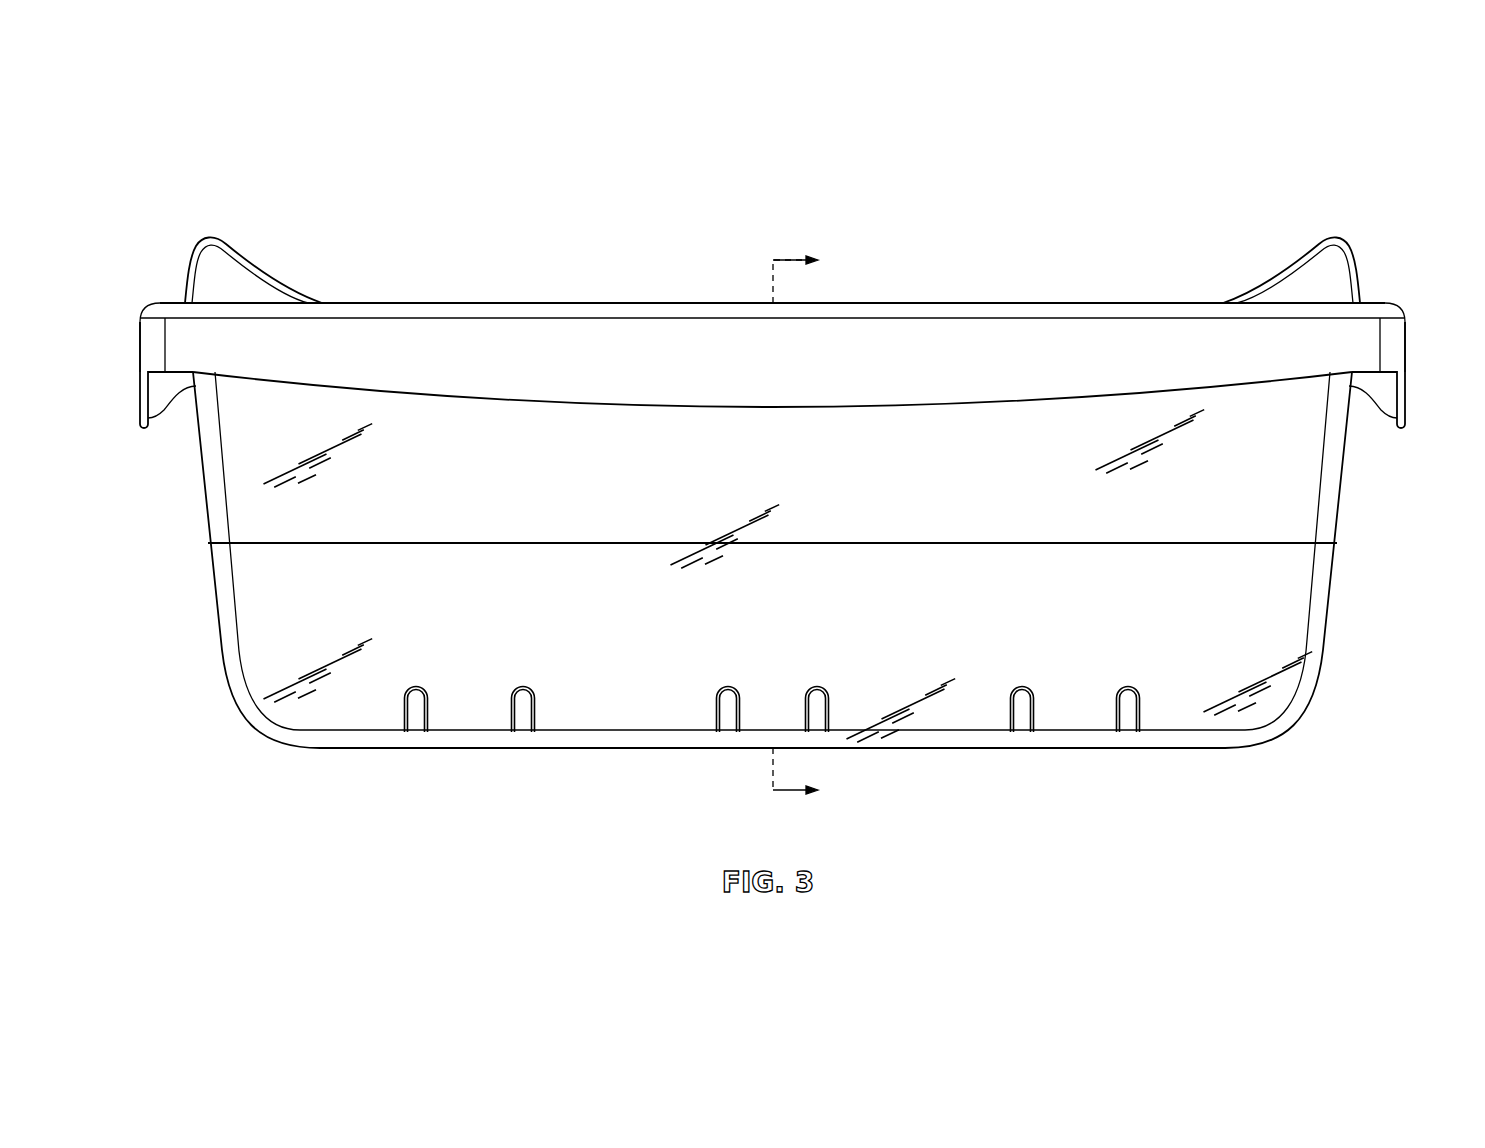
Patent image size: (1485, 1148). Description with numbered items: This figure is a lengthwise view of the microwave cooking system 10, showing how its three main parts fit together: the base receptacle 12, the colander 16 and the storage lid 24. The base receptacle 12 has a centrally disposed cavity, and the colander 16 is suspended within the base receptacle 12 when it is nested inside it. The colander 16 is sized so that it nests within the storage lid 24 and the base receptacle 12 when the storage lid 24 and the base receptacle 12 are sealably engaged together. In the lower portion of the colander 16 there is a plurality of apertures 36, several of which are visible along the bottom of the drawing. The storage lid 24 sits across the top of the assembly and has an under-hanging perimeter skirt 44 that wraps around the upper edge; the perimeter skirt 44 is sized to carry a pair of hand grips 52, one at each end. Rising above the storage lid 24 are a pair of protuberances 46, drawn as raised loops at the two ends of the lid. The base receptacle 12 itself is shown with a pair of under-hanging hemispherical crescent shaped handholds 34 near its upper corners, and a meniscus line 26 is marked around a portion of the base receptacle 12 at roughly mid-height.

The microwave cooking system 10 is at (278, 144).
The base receptacle 12 is at (1341, 563).
The colander 16 is at (1314, 625).
The storage lid 24 is at (1043, 300).
The meniscus line 26 is at (248, 556).
The handhold 34 is at (160, 400).
The aperture 36 is at (417, 725).
The perimeter skirt 44 is at (418, 335).
The protuberance 46 is at (232, 262).
The hand grip 52 is at (135, 422).